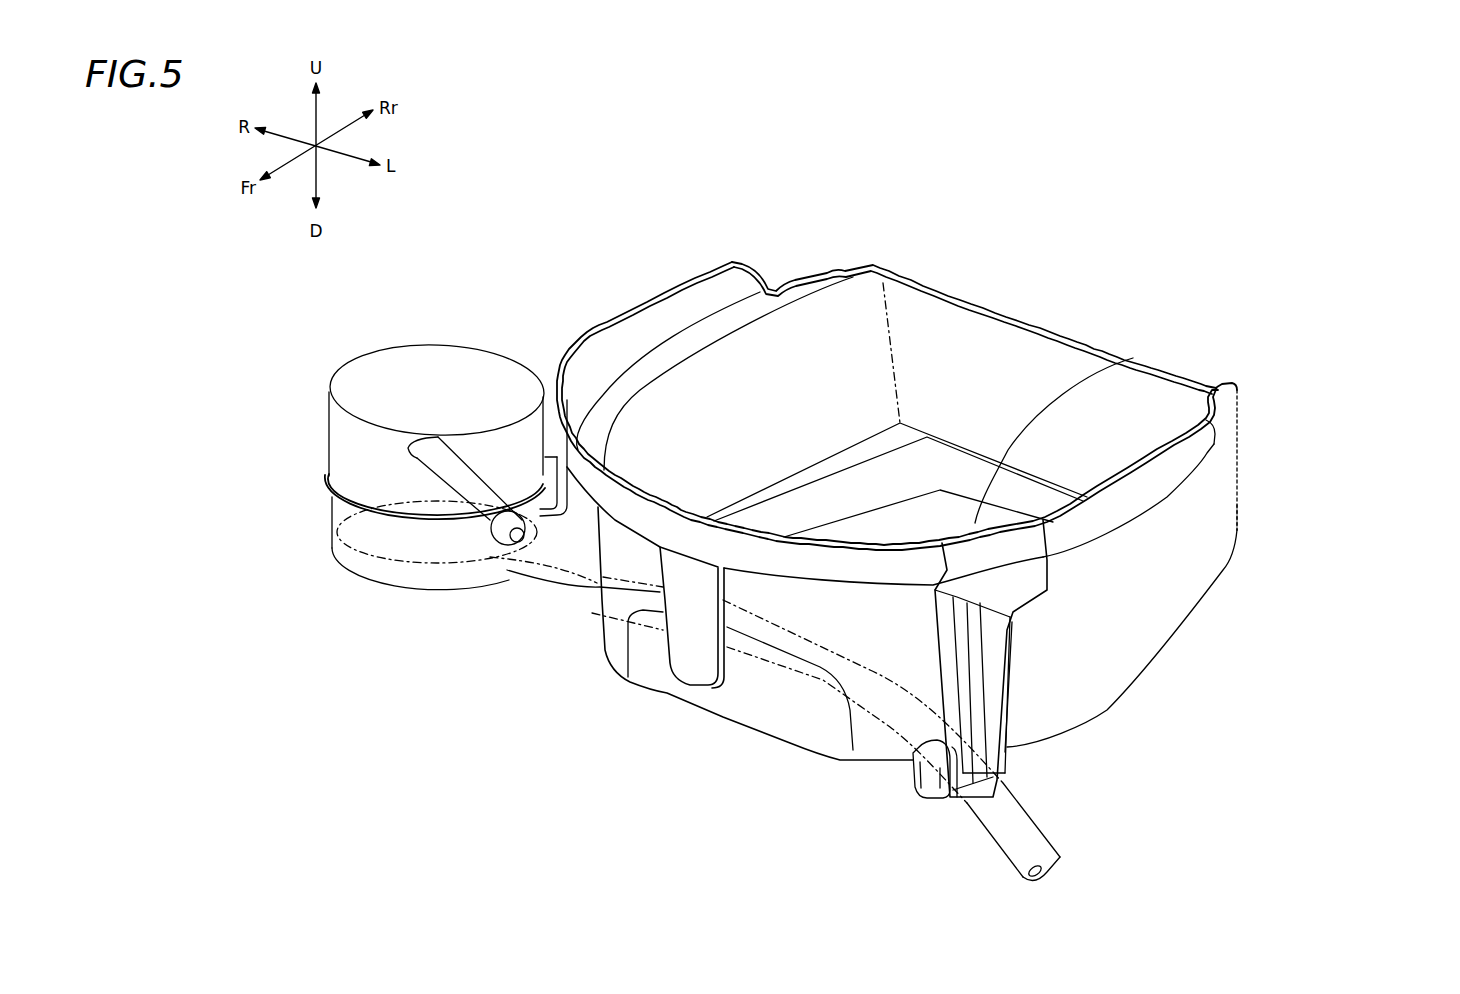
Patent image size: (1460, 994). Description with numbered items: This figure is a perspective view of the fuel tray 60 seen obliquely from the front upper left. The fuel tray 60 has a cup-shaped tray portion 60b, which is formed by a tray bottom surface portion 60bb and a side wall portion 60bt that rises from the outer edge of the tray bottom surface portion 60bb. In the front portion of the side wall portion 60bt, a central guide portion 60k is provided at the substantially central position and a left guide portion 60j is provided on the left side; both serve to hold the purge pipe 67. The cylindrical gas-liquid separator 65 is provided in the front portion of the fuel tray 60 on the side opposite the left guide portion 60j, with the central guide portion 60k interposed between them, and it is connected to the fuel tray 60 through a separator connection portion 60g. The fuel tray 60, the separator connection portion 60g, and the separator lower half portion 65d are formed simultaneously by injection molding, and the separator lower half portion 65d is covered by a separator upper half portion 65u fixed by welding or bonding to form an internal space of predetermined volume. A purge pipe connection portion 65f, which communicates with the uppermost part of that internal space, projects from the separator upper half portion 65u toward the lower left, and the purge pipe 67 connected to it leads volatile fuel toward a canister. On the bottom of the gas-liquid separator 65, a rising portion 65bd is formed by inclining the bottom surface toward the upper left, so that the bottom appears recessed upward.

The fuel tray 60 is at (1016, 318).
The tray portion 60b is at (1385, 305).
The tray bottom surface portion 60bb is at (1133, 358).
The side wall portion 60bt is at (1172, 530).
The separator connection portion 60g is at (556, 520).
The central guide portion 60k is at (693, 647).
The left guide portion 60j is at (1010, 677).
The gas-liquid separator 65 is at (215, 430).
The separator upper half portion 65u is at (347, 438).
The separator lower half portion 65d is at (342, 527).
The rising portion 65bd is at (430, 565).
The purge pipe connection portion 65f is at (513, 517).
The purge pipe 67 is at (1010, 840).